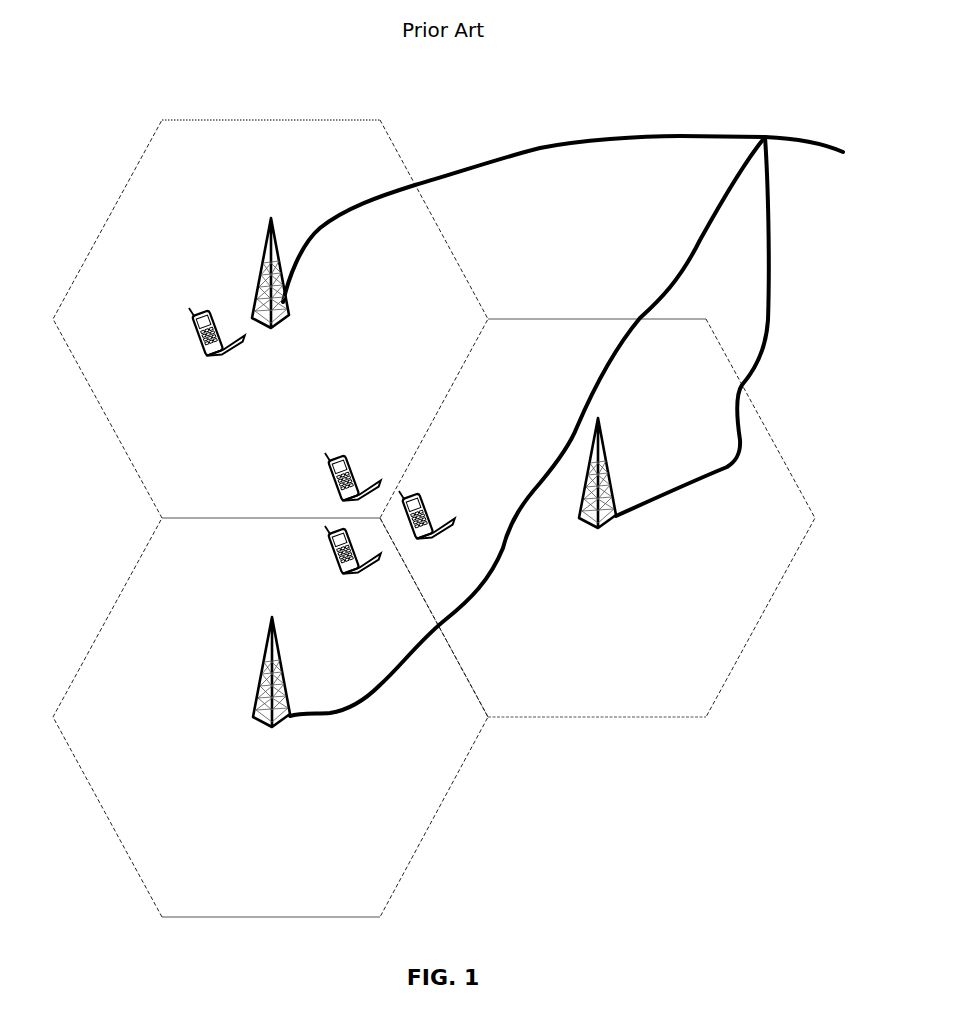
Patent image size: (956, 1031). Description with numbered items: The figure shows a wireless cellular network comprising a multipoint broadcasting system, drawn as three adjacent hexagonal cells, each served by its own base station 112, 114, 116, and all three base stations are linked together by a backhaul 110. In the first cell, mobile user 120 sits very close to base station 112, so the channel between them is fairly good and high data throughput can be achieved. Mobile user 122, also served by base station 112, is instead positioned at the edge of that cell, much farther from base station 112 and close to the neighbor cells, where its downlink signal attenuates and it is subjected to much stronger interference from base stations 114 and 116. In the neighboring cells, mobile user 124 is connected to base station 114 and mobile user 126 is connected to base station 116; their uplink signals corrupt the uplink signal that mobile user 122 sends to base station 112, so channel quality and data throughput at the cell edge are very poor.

The backhaul 110 is at (563, 412).
The base station 112 is at (252, 273).
The base station 114 is at (615, 473).
The base station 116 is at (253, 672).
The mobile user 120 is at (200, 332).
The mobile user 122 is at (335, 472).
The mobile user 124 is at (436, 509).
The mobile user 126 is at (335, 545).